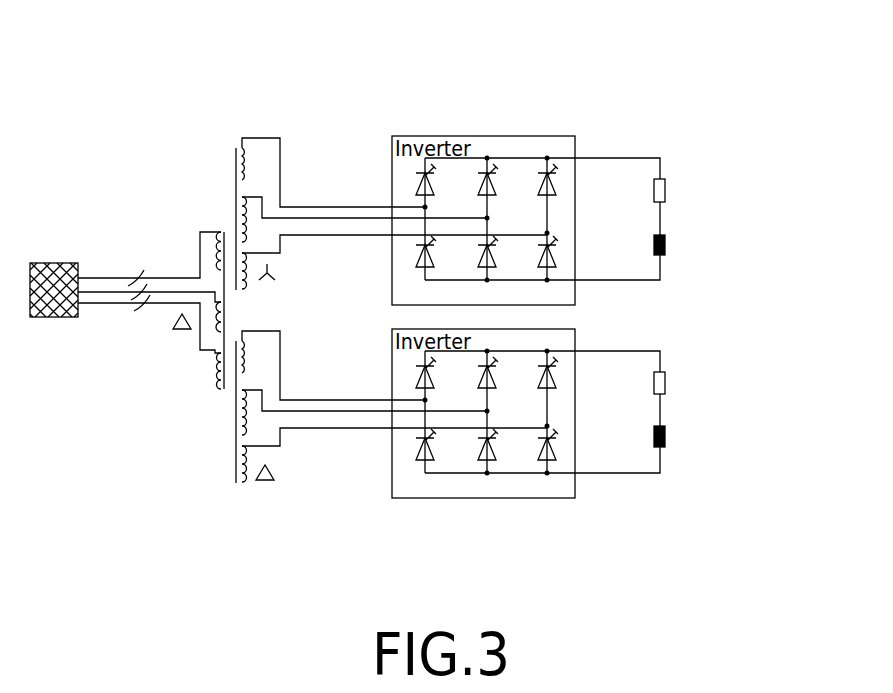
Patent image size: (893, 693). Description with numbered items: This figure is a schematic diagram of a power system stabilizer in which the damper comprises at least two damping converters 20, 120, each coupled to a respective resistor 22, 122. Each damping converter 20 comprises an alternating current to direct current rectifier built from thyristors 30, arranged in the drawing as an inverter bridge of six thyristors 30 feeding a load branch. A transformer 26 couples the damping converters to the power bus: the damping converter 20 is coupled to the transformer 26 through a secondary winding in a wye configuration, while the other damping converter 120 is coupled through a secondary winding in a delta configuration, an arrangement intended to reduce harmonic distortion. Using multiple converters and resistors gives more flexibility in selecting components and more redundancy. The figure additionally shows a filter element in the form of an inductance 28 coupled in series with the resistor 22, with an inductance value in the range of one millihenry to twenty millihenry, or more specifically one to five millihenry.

The damping converter 20 is at (528, 117).
The resistor 22 is at (665, 192).
The transformer 26 is at (215, 212).
The inductance 28 is at (665, 245).
The thyristor 30 is at (408, 180).
The damping converter 120 is at (487, 533).
The resistor 122 is at (666, 384).